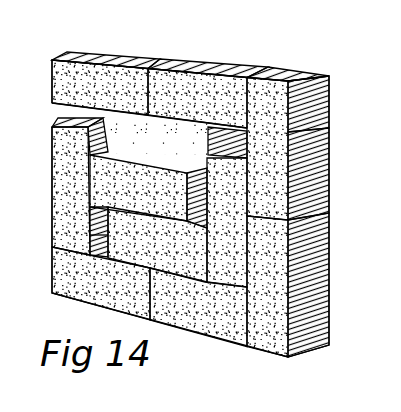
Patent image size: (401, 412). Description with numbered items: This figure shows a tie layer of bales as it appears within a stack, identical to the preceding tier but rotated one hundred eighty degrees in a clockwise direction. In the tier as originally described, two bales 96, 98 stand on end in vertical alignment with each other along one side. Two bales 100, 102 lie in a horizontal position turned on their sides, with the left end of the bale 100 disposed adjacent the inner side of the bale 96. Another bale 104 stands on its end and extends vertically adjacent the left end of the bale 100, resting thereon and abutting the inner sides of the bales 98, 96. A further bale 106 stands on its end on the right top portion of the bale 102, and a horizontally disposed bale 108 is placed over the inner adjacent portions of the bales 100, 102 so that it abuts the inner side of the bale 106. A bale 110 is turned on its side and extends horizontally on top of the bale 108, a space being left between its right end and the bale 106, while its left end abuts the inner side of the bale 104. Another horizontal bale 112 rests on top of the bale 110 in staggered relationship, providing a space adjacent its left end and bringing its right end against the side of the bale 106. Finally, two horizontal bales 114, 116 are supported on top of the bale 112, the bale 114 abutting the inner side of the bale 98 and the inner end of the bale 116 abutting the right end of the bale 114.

The bale 96 is at (323, 292).
The bale 98 is at (327, 138).
The bale 100 is at (150, 325).
The bale 102 is at (66, 283).
The bale 104 is at (238, 282).
The bale 106 is at (65, 146).
The bale 108 is at (125, 237).
The bale 110 is at (95, 186).
The bale 112 is at (158, 134).
The bale 114 is at (102, 52).
The bale 116 is at (220, 63).